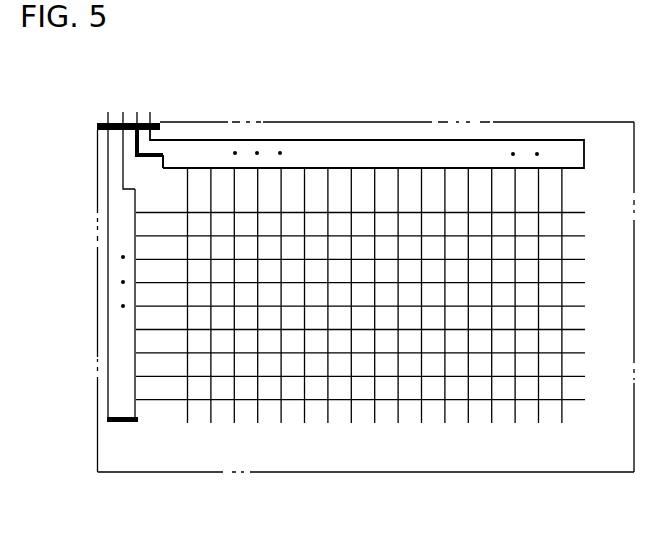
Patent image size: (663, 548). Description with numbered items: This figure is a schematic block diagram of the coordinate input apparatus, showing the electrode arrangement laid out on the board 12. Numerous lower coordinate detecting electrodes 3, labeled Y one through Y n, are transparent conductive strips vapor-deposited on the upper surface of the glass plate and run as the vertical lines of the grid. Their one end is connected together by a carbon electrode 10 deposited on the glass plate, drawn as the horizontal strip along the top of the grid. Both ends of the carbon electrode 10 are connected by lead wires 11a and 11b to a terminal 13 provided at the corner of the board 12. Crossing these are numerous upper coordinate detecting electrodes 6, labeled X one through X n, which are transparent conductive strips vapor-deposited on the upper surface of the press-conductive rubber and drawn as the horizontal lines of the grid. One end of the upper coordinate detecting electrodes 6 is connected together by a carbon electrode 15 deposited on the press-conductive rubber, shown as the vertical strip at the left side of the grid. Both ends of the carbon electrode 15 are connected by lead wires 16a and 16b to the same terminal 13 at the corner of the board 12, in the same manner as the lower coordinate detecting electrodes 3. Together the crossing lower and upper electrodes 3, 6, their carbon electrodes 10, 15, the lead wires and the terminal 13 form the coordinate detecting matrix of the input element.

The lower coordinate detecting electrodes 3 is at (469, 182).
The upper coordinate detecting electrodes 6 is at (173, 400).
The carbon electrode 10 is at (383, 168).
The lead wire 11a is at (323, 141).
The lead wire 11b is at (163, 152).
The board 12 is at (223, 473).
The terminal 13 is at (153, 123).
The carbon electrode 15 is at (140, 421).
The lead wire 16a is at (108, 387).
The lead wire 16b is at (123, 185).